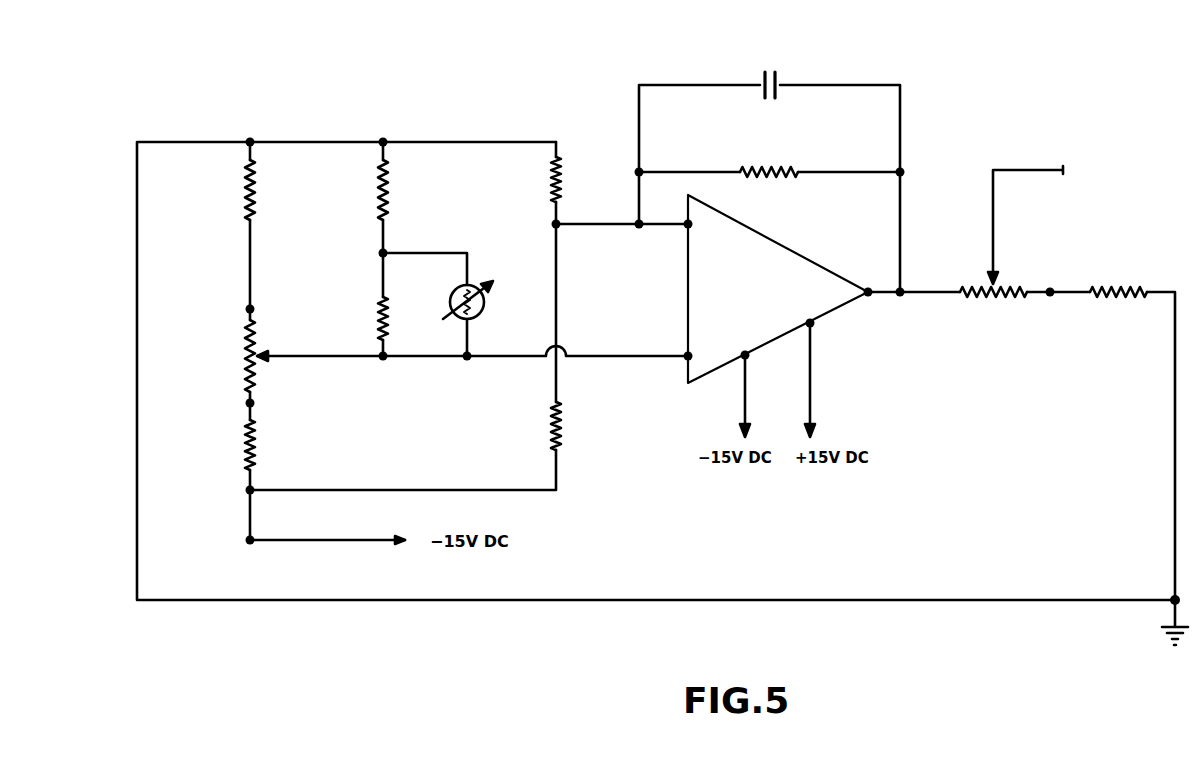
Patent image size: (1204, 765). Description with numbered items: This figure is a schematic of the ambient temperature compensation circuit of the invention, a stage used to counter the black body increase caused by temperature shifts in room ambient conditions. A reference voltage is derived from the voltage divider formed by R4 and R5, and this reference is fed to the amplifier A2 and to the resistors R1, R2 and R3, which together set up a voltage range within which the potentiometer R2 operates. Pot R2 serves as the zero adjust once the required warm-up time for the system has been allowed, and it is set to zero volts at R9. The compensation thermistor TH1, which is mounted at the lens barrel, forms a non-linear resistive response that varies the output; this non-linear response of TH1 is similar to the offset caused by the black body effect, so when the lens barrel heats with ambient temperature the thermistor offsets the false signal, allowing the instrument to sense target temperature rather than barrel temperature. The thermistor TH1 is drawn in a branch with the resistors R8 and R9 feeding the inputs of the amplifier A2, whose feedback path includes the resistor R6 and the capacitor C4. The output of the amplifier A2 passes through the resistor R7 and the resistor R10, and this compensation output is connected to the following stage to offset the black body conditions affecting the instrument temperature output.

The resistor R1 is at (268, 190).
The potentiometer R2 is at (235, 356).
The resistor R3 is at (266, 445).
The voltage divider resistor R4 is at (573, 179).
The voltage divider resistor R5 is at (573, 426).
The resistor R6 is at (769, 158).
The resistor R7 is at (1071, 237).
The resistor R8 is at (402, 190).
The resistor R9 is at (398, 318).
The resistor R10 is at (1118, 277).
The capacitor C4 is at (759, 67).
The thermistor TH1 is at (488, 300).
The amplifier A2 is at (757, 305).